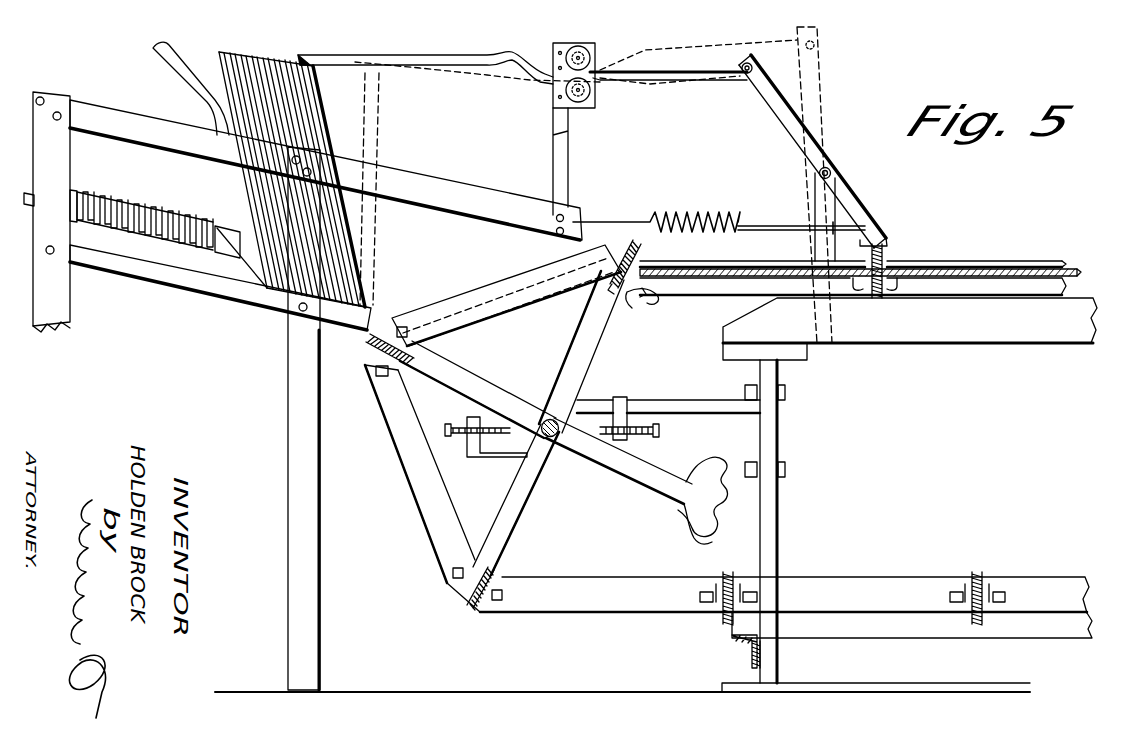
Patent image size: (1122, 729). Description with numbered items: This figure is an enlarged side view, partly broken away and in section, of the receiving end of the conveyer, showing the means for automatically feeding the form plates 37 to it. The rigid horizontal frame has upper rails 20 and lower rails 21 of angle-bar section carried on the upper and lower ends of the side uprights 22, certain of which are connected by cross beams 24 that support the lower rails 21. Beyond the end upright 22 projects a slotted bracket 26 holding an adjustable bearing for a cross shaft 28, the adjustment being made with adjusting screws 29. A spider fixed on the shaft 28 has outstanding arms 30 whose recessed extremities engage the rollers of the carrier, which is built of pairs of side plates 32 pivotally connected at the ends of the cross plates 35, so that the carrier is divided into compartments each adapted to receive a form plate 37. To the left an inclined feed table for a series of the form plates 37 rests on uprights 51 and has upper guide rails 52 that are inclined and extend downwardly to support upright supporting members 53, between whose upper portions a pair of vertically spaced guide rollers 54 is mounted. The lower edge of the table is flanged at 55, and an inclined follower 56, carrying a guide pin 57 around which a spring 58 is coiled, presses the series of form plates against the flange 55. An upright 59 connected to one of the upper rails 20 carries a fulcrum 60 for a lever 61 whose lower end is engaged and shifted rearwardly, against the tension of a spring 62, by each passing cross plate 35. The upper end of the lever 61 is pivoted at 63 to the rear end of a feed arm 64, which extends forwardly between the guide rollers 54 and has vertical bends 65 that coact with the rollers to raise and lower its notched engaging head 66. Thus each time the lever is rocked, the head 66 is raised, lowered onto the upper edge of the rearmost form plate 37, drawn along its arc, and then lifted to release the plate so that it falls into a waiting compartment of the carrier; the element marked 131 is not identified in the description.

The upper rails 20 is at (923, 340).
The lower rails 21 is at (900, 633).
The side uprights 22 is at (776, 518).
The cross beams 24 is at (742, 648).
The slotted brackets 26 is at (597, 403).
The cross shafts 28 is at (555, 440).
The adjusting screws 29 is at (452, 447).
The spider arms 30 is at (482, 395).
The side plates 32 is at (487, 285).
The cross plates 35 is at (886, 252).
The form plates 37 is at (243, 55).
The uprights 51 is at (67, 312).
The upper guide rails 52 is at (135, 122).
The upright supporting members 53 is at (568, 172).
The guide rollers 54 is at (583, 45).
The flange 55 is at (378, 318).
The inclined follower 56 is at (230, 182).
The guide pin 57 is at (33, 198).
The spring 58 is at (130, 233).
The upright 59 is at (818, 258).
The fulcrum 60 is at (832, 174).
The lever 61 is at (782, 123).
The spring 62 is at (697, 215).
The pivotal connection 63 is at (744, 73).
The feed arm 64 is at (672, 62).
The vertical bends 65 is at (537, 56).
The notched engaging head 66 is at (315, 60).
The clamp 131 is at (722, 520).